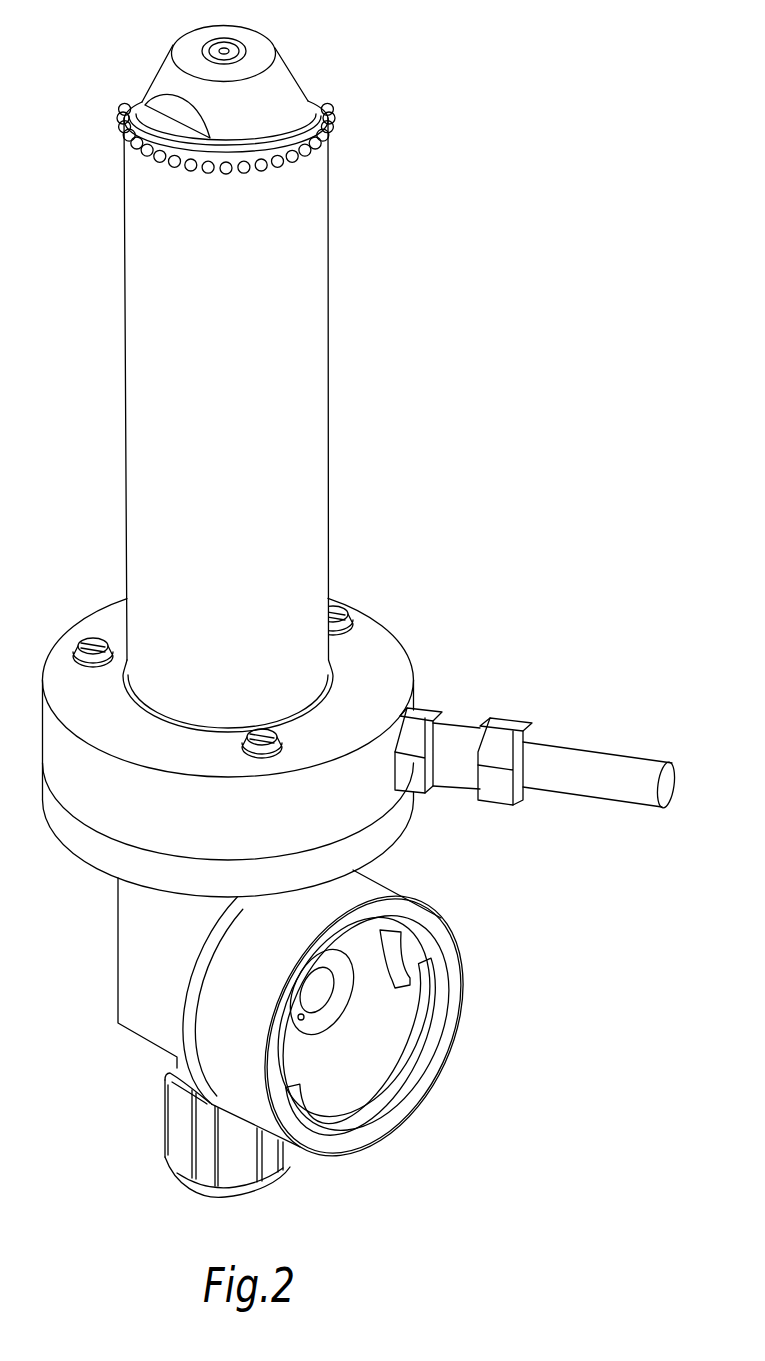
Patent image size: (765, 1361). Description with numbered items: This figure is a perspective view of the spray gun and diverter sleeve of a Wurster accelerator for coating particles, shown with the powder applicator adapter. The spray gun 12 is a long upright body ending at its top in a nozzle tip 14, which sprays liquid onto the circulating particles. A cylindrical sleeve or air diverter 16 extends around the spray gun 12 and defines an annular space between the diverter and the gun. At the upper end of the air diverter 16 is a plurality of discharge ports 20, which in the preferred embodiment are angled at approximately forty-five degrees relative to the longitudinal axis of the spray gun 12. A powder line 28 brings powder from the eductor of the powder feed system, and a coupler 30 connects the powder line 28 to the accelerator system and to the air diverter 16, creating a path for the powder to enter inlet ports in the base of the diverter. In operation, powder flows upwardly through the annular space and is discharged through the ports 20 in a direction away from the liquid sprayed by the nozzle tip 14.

The spray gun 12 is at (457, 347).
The nozzle tip 14 is at (215, 46).
The air diverter 16 is at (318, 318).
The discharge ports 20 is at (149, 160).
The powder line 28 is at (572, 755).
The coupler 30 is at (380, 887).